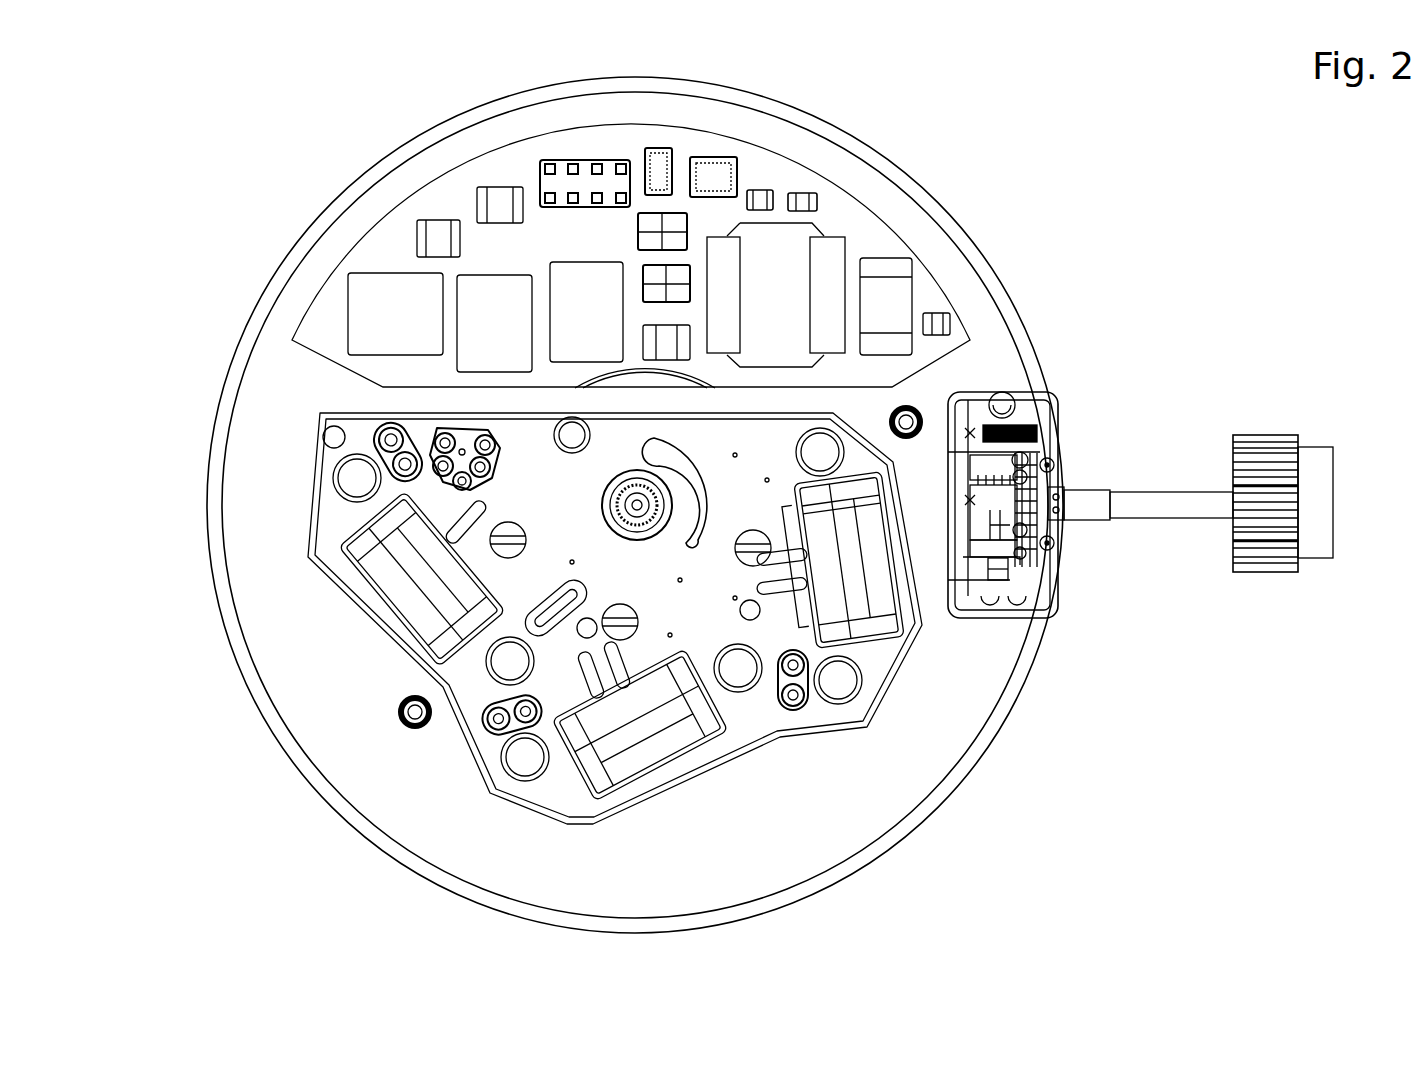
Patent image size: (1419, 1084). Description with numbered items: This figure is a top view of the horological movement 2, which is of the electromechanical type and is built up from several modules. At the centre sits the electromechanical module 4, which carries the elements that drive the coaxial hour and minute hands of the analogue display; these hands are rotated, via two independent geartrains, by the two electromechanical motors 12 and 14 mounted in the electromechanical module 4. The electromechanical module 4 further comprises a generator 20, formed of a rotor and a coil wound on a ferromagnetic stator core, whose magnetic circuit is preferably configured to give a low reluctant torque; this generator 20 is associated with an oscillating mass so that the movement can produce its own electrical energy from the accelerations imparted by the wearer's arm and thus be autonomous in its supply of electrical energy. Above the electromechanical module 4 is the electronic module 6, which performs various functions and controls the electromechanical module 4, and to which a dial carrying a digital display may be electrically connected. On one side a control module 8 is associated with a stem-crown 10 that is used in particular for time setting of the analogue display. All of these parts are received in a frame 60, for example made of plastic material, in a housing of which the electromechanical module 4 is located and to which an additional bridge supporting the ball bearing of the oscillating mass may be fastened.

The horological movement 2 is at (1018, 220).
The electromechanical module 4 is at (390, 675).
The electronic module 6 is at (383, 212).
The control module 8 is at (1062, 425).
The stem-crown 10 is at (1218, 545).
The electromechanical motor 12 is at (568, 788).
The electromechanical motor 14 is at (885, 652).
The generator 20 is at (342, 530).
The frame 60 is at (788, 847).